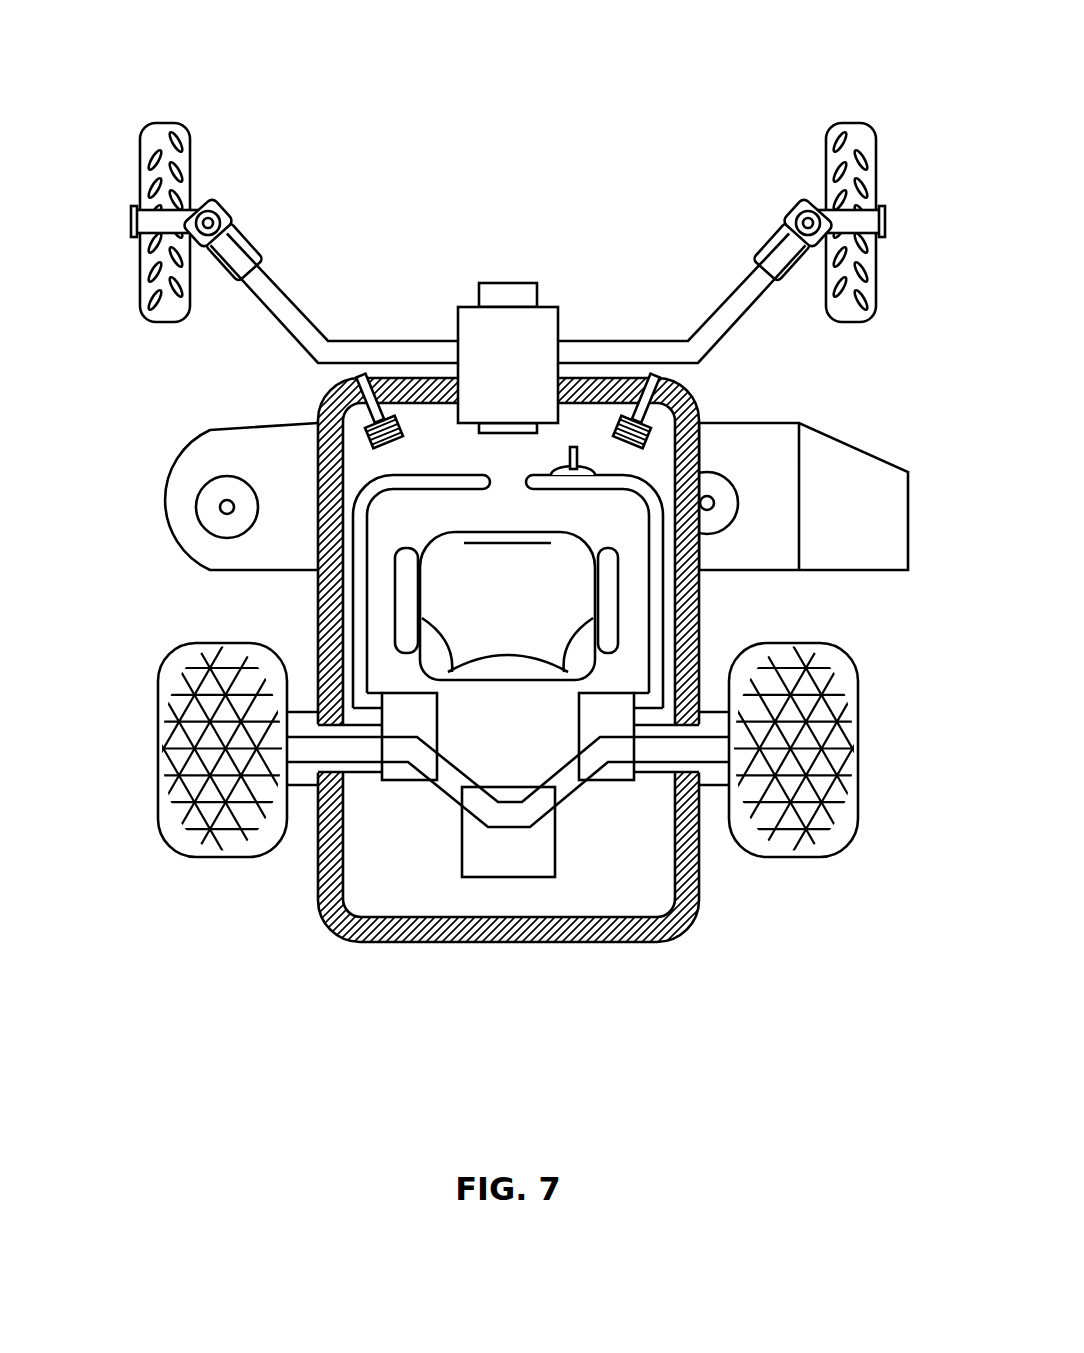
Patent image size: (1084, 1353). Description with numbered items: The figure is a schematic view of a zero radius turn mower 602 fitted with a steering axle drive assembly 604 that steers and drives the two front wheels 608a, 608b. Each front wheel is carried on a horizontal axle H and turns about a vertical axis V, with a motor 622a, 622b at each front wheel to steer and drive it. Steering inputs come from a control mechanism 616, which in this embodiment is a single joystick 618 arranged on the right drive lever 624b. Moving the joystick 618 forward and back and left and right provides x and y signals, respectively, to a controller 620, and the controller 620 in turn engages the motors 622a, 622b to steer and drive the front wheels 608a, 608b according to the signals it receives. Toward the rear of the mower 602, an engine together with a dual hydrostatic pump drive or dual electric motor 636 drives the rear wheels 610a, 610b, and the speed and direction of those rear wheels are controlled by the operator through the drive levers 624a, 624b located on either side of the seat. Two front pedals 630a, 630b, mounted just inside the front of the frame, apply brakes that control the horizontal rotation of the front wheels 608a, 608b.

The zero radius turn mower 602 is at (812, 399).
The steering axle drive assembly 604 is at (600, 175).
The front wheel 608a is at (167, 122).
The front wheel 608b is at (857, 122).
The rear wheel 610a is at (218, 857).
The rear wheel 610b is at (800, 857).
The control mechanism 616 is at (606, 462).
The joystick 618 is at (580, 446).
The controller 620 is at (543, 380).
The motor 622a is at (253, 243).
The motor 622b is at (768, 240).
The drive lever 624a is at (360, 588).
The right drive lever 624b is at (656, 567).
The front pedal 630a is at (370, 428).
The front pedal 630b is at (652, 381).
The dual hydrostatic pump drive or dual electric motor 636 is at (541, 866).
The horizontal axis H is at (128, 221).
The vertical axis V is at (218, 205).